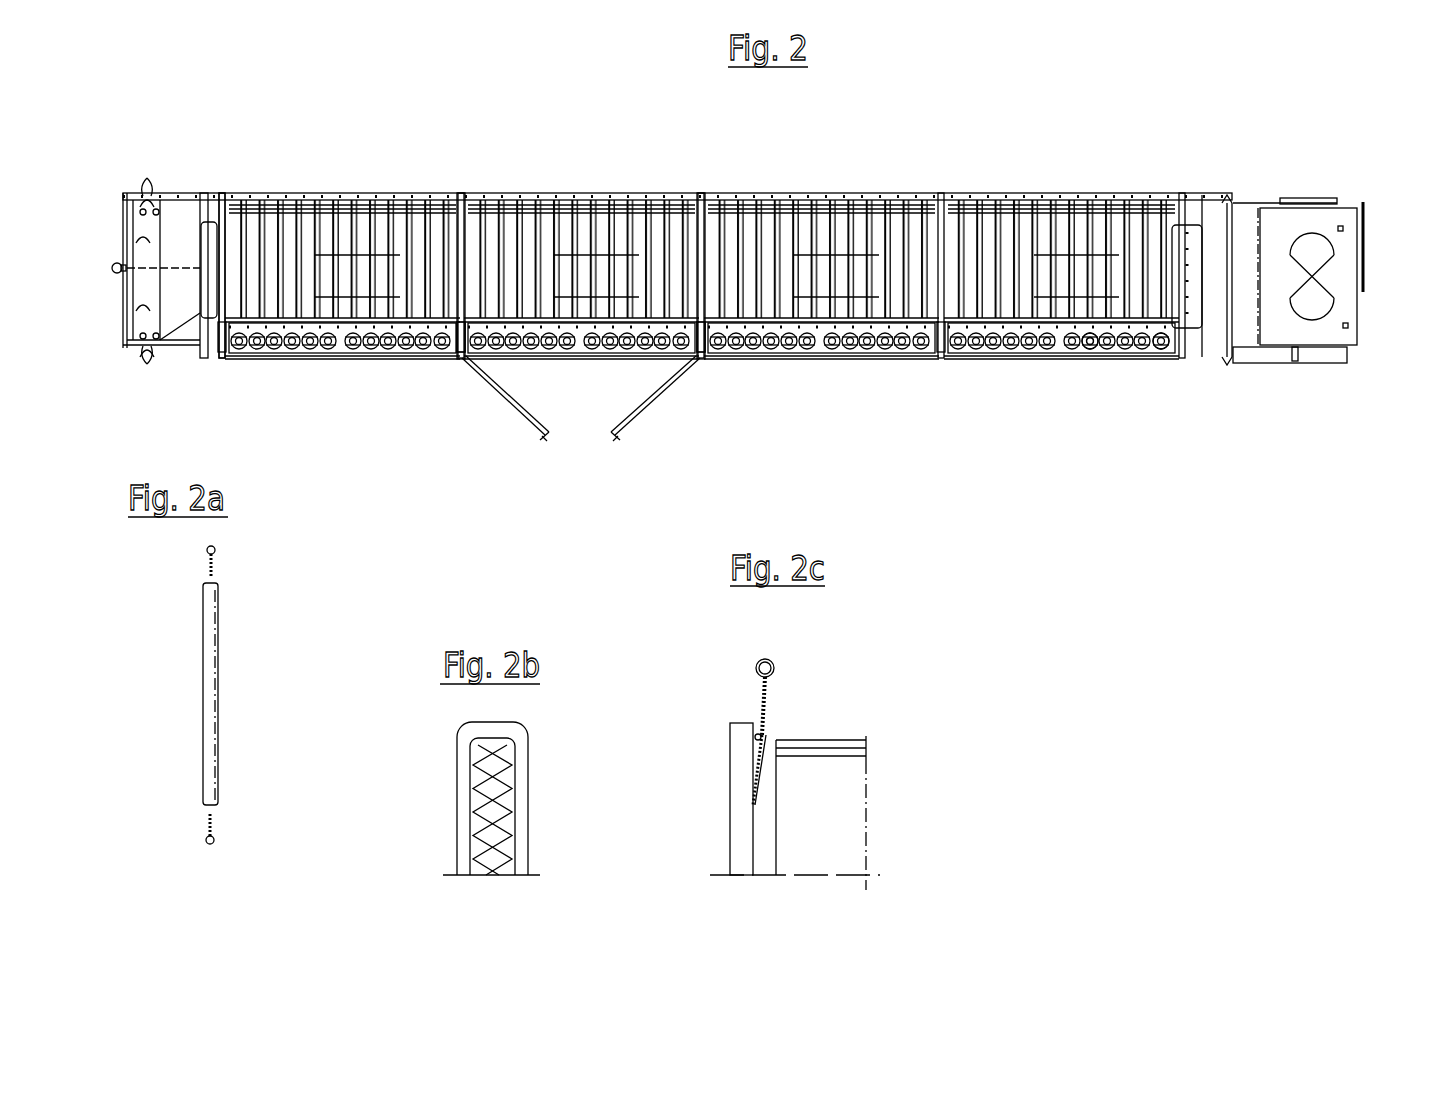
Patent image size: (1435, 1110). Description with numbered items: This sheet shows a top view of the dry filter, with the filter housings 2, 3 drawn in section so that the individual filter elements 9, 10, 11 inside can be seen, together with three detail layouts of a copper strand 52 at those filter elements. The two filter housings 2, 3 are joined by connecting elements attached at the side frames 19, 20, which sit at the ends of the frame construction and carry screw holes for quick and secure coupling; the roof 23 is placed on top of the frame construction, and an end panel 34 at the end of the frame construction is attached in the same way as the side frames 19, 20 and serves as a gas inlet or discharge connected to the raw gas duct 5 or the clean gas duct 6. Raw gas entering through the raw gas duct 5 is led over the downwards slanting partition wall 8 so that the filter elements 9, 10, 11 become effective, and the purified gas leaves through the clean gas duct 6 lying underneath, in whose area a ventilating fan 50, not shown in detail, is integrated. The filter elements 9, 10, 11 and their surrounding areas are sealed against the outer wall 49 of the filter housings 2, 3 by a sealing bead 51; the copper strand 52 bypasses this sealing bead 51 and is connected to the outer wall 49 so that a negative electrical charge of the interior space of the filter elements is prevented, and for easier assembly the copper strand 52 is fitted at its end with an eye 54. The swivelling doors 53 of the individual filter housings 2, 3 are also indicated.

In FIG. 2, the filter housing 2 is at (338, 193).
In FIG. 2, the filter housing 3 is at (873, 197).
In FIG. 2, the raw gas duct 5 is at (170, 207).
In FIG. 2, the clean gas duct 6 is at (1300, 222).
In FIG. 2, the partition wall 8 is at (905, 350).
In FIG. 2, the filter element 9 is at (258, 197).
In FIG. 2A, the filter element 9 is at (205, 712).
In FIG. 2B, the filter element 9 is at (463, 813).
In FIG. 2C, the filter element 9 is at (828, 824).
In FIG. 2, the filter element 10 is at (488, 200).
In FIG. 2, the filter element 11 is at (773, 203).
In FIG. 2, the side frame 19 is at (700, 197).
In FIG. 2, the side frame 20 is at (460, 358).
In FIG. 2, the roof 23 is at (700, 355).
In FIG. 2, the end panel 34 is at (460, 358).
In FIG. 2, the outer wall 49 is at (1165, 355).
In FIG. 2, the ventilating fan 50 is at (1325, 325).
In FIG. 2, the sealing bead 51 is at (1090, 355).
In FIG. 2C, the sealing bead 51 is at (763, 737).
In FIG. 2, the copper strand 52 is at (1090, 355).
In FIG. 2A, the copper strand 52 is at (209, 577).
In FIG. 2C, the copper strand 52 is at (768, 708).
In FIG. 2, the swivelling door 53 is at (545, 438).
In FIG. 2A, the eye 54 is at (207, 553).
In FIG. 2C, the eye 54 is at (773, 662).